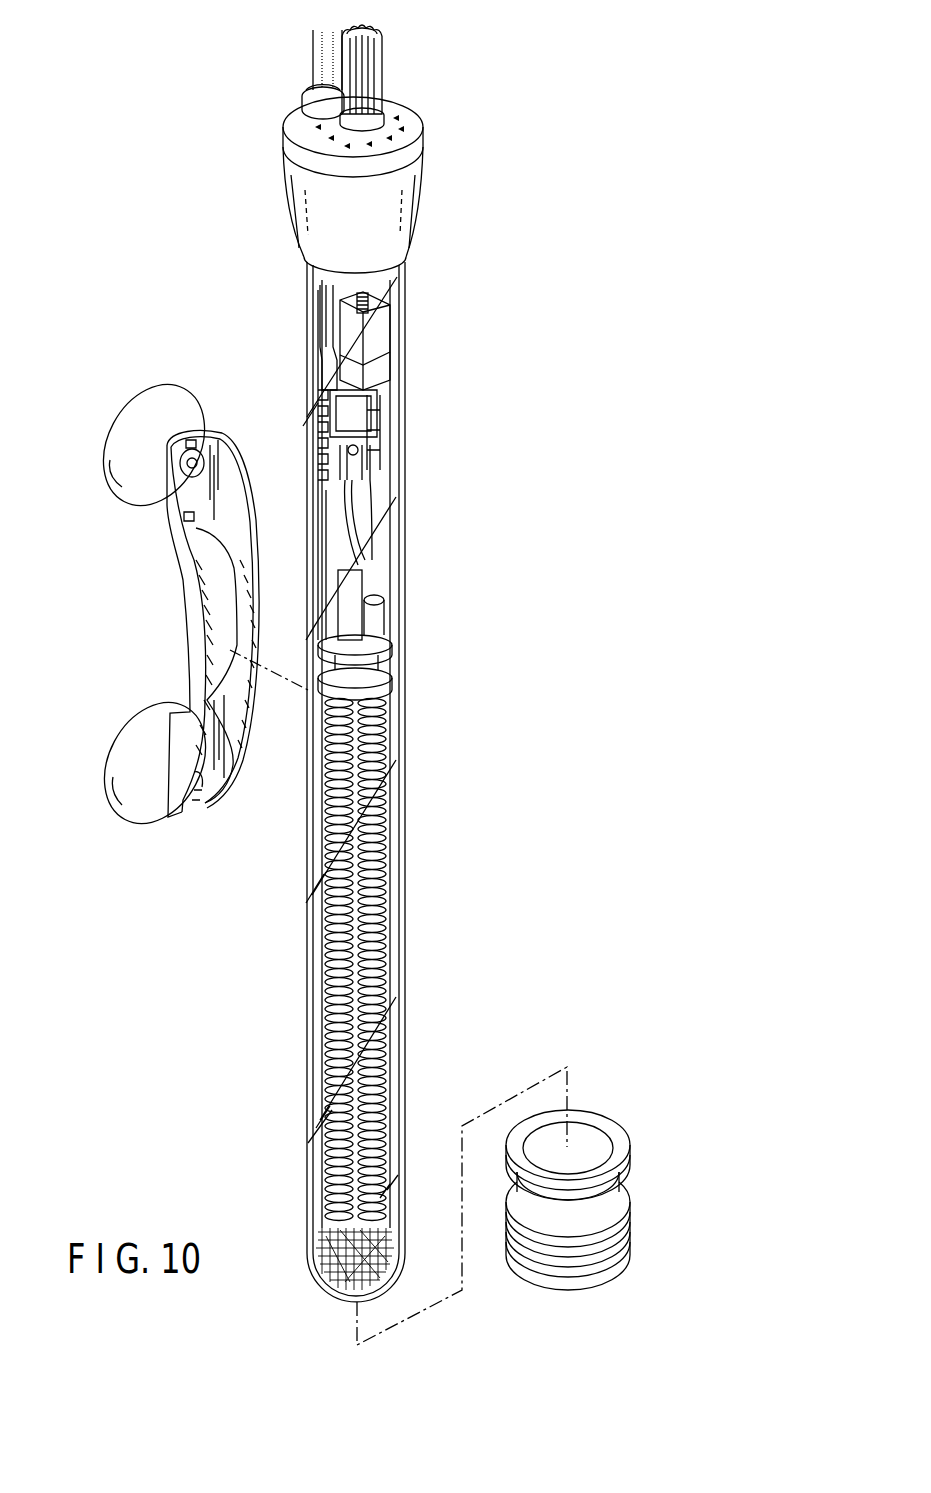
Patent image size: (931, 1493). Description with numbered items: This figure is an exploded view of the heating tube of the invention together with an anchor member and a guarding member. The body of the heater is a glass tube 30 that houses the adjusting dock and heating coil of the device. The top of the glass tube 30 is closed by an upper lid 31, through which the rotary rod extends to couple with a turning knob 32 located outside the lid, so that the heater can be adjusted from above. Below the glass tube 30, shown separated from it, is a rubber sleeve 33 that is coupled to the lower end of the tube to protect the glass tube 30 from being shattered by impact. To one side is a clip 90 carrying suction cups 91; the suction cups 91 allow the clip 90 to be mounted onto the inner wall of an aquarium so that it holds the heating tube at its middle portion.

The glass tube 30 is at (398, 740).
The upper lid 31 is at (410, 132).
The turning knob 32 is at (368, 62).
The rubber sleeve 33 is at (590, 1130).
The clip 90 is at (187, 630).
The suction cups 91 is at (113, 497).